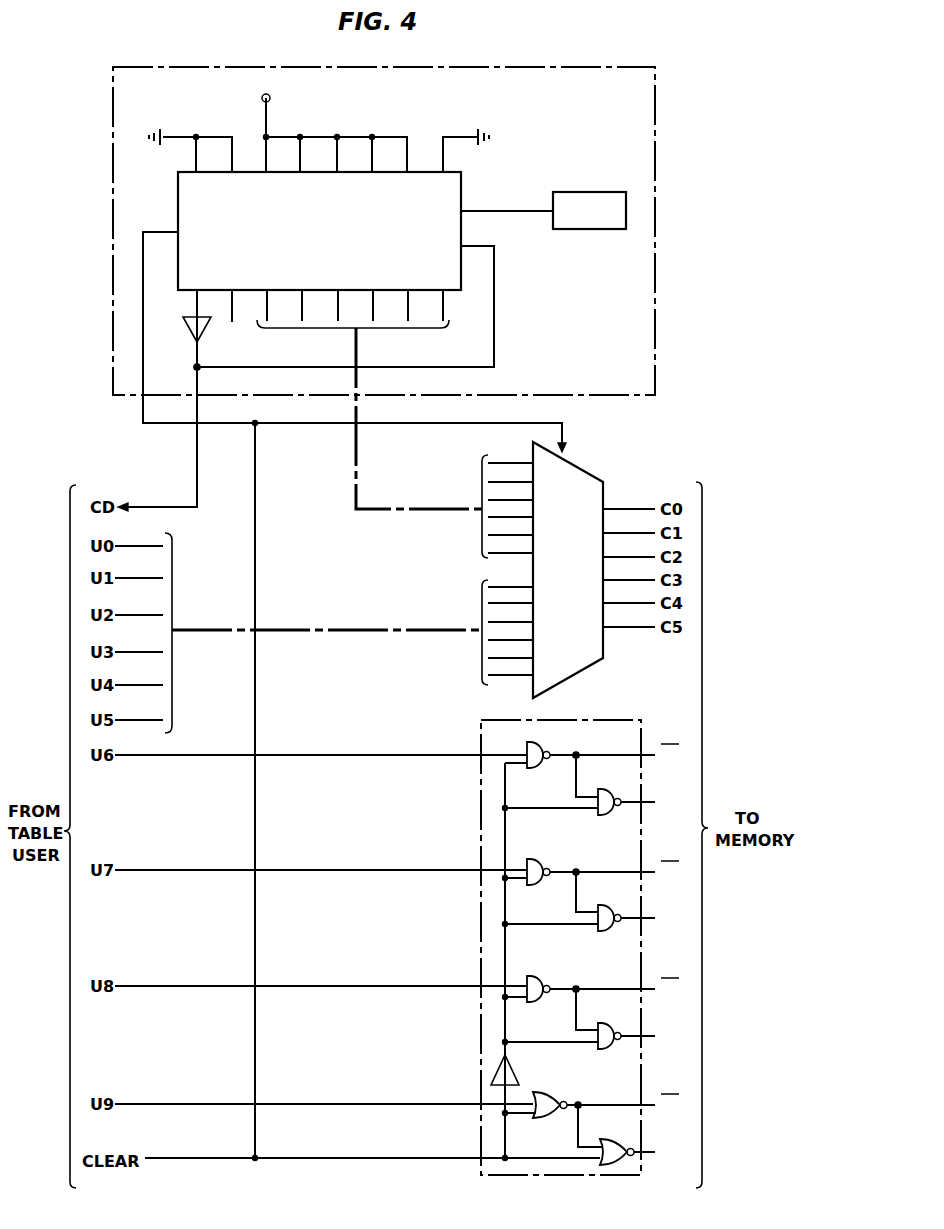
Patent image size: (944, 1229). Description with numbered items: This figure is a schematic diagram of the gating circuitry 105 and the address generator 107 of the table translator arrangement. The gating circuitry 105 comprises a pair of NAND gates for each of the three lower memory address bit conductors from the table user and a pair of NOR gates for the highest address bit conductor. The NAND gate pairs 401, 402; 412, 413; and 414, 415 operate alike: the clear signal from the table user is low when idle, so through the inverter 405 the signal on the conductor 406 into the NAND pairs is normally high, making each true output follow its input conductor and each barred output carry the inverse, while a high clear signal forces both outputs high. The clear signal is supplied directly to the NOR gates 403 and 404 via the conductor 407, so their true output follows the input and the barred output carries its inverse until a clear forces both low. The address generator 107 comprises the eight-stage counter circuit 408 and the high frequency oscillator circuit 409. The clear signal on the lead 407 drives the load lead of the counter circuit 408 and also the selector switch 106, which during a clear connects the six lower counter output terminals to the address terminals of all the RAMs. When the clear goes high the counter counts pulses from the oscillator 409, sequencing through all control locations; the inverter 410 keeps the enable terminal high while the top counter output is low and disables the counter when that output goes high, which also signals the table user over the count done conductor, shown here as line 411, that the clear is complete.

The address generator 107 is at (174, 67).
The counter circuit 408 is at (462, 187).
The oscillator circuit 409 is at (592, 192).
The inverter 410 is at (185, 331).
The count down line 411 is at (197, 462).
The clear conductor 407 is at (143, 415).
The selector switch 106 is at (576, 672).
The gating circuitry 105 is at (480, 721).
The NAND gate 401 is at (538, 746).
The NAND gate 402 is at (614, 790).
The NAND gate 412 is at (538, 862).
The NAND gate 413 is at (614, 905).
The conductor 406 is at (505, 942).
The NAND gate 414 is at (538, 976).
The NAND gate 415 is at (614, 1018).
The inverter 405 is at (520, 1069).
The NOR gate 403 is at (554, 1092).
The NOR gate 404 is at (622, 1139).